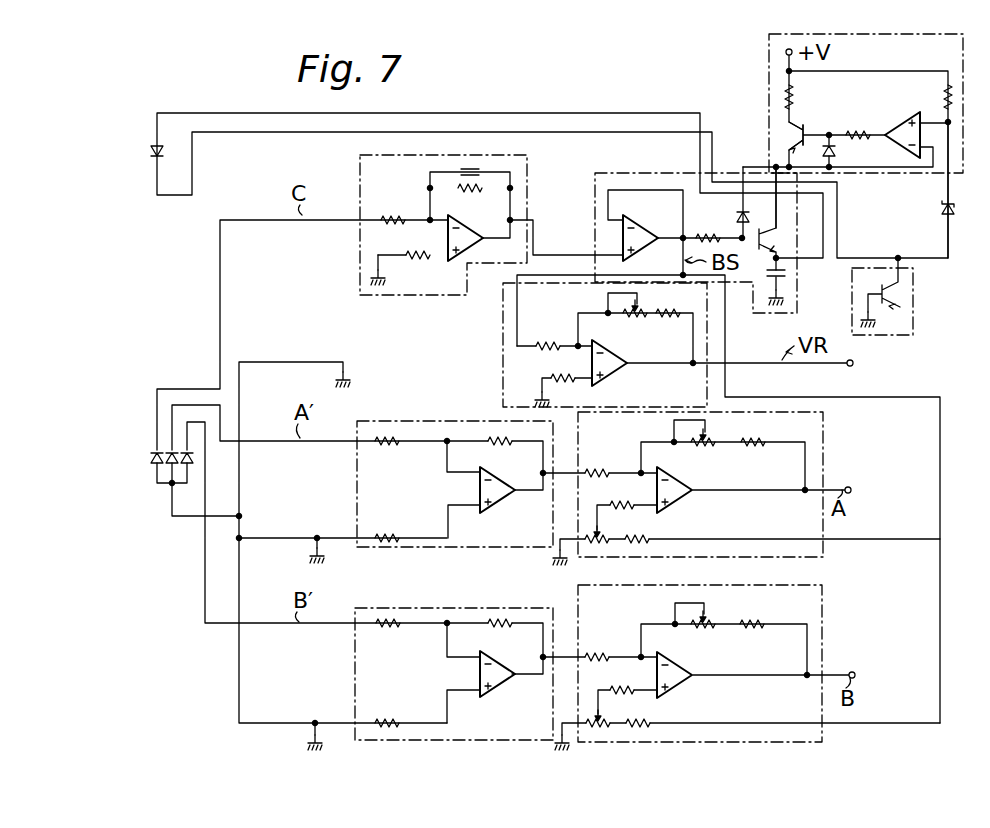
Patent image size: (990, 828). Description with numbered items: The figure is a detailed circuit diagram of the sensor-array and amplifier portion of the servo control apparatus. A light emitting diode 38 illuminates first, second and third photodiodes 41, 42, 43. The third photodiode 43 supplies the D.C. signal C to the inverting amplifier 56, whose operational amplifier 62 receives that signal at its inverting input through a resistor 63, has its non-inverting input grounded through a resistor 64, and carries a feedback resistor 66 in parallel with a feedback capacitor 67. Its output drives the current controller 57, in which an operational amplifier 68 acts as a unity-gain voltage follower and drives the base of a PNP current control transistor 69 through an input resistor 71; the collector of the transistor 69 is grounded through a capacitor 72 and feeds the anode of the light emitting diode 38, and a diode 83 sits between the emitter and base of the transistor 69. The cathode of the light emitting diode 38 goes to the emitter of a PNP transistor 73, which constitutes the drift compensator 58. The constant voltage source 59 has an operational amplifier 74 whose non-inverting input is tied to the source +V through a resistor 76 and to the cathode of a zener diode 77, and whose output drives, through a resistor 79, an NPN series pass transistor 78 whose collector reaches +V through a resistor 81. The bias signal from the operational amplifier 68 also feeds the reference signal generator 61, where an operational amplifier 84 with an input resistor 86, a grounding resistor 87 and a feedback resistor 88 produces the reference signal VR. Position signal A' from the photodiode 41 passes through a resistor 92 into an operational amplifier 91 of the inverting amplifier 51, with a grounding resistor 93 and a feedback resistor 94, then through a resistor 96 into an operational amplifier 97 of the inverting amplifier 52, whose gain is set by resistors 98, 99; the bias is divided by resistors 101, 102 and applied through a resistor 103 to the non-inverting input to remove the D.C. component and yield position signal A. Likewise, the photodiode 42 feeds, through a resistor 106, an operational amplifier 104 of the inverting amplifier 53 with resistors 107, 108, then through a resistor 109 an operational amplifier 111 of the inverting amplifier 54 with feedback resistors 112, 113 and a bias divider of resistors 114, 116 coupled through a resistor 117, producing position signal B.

The light emitting diode 38 is at (150, 152).
The first photodiode 41 is at (170, 449).
The second photodiode 42 is at (184, 448).
The third photodiode 43 is at (154, 465).
The inverting amplifier 51 is at (412, 422).
The inverting amplifier 52 is at (823, 462).
The inverting amplifier 53 is at (418, 608).
The inverting amplifier 54 is at (822, 610).
The inverting amplifier 56 is at (413, 295).
The current controller 57 is at (614, 174).
The drift compensator 58 is at (913, 292).
The constant voltage source 59 is at (767, 136).
The reference signal generator 61 is at (504, 344).
The operational amplifier 62 is at (476, 252).
The resistor 63 is at (398, 218).
The resistor 64 is at (424, 258).
The feedback resistor 66 is at (475, 190).
The feedback capacitor 67 is at (483, 170).
The operational amplifier 68 is at (660, 244).
The PNP current control transistor 69 is at (772, 245).
The input resistor 71 is at (708, 236).
The capacitor 72 is at (788, 281).
The PNP transistor 73 is at (891, 310).
The operational amplifier 74 is at (903, 120).
The resistor 76 is at (934, 94).
The zener diode 77 is at (856, 208).
The NPN series pass transistor 78 is at (804, 124).
The resistor 79 is at (854, 124).
The resistor 81 is at (632, 317).
The diode 83 is at (749, 216).
The operational amplifier 84 is at (620, 372).
The resistor 86 is at (548, 336).
The resistor 87 is at (566, 373).
The resistor 88 is at (670, 323).
The operational amplifier 91 is at (493, 506).
The resistor 92 is at (392, 442).
The resistor 93 is at (392, 532).
The feedback resistor 94 is at (502, 442).
The resistor 96 is at (600, 464).
The operational amplifier 97 is at (680, 498).
The resistor 98 is at (756, 444).
The variable resistor 99 is at (706, 444).
The resistor 101 is at (640, 550).
The potentiometer 102 is at (594, 550).
The resistor 103 is at (628, 508).
The operational amplifier 104 is at (496, 680).
The resistor 106 is at (386, 630).
The resistor 107 is at (392, 720).
The feedback resistor 108 is at (500, 628).
The resistor 109 is at (596, 650).
The operational amplifier 111 is at (684, 684).
The resistor 112 is at (760, 618).
The variable resistor 113 is at (710, 618).
The resistor 114 is at (648, 718).
The potentiometer 116 is at (604, 722).
The resistor 117 is at (622, 690).